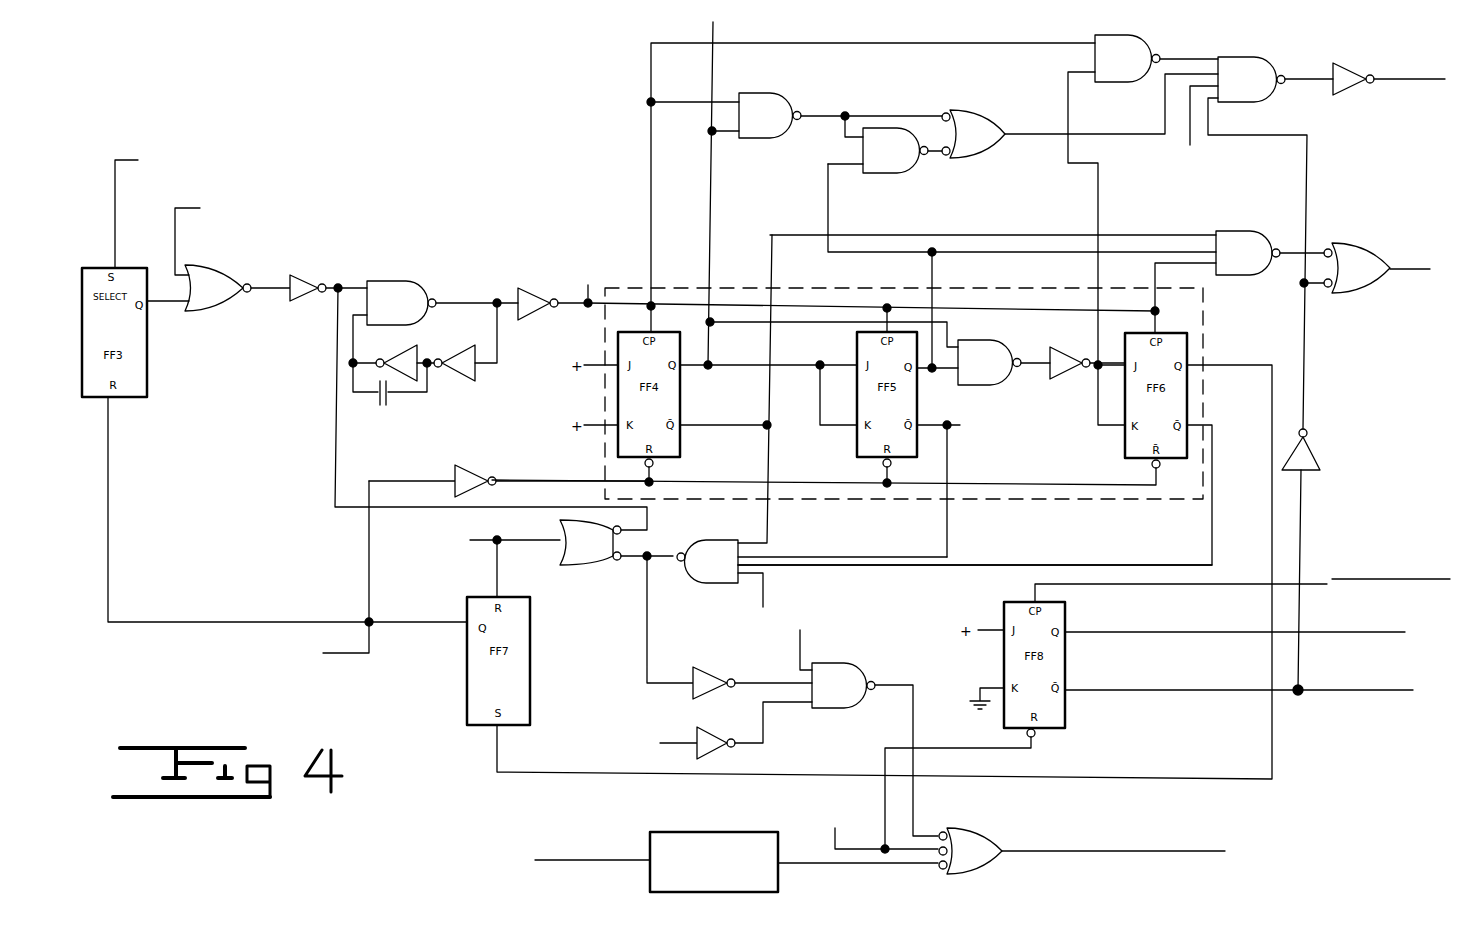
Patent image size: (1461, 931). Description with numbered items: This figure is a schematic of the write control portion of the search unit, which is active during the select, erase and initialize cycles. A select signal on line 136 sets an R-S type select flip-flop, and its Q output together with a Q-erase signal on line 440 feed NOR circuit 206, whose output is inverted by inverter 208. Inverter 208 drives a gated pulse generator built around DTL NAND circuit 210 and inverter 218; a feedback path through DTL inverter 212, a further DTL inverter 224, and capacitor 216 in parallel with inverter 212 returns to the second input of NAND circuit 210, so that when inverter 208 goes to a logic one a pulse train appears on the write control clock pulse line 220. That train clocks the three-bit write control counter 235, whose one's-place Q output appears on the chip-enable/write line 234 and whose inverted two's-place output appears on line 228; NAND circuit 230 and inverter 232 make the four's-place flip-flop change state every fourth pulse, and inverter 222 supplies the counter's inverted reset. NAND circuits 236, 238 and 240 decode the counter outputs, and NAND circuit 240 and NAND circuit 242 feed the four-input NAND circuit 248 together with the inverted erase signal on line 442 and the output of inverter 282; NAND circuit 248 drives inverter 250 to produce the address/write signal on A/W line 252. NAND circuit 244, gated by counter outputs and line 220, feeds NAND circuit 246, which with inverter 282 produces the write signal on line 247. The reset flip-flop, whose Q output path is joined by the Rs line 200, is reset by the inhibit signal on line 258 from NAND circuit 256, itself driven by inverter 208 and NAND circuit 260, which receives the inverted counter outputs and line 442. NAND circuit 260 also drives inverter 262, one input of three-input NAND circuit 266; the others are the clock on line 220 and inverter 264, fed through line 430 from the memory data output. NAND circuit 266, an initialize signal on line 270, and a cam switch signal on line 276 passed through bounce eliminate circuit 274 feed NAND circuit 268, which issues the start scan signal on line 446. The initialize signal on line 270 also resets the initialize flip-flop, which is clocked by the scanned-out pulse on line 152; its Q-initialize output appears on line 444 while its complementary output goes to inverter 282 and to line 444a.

The select signal line 136 is at (117, 201).
The Q-erase signal line 440 is at (175, 238).
The NOR circuit 206 is at (232, 270).
The inverter 208 is at (312, 272).
The DTL logic NAND circuit 210 is at (425, 280).
The DTL inverter 212 is at (412, 345).
The capacitor 216 is at (383, 405).
The inverter 218 is at (545, 290).
The write control clock pulse (WCCP) line 220 is at (590, 320).
The inverter 222 is at (478, 463).
The DTL inverter 224 is at (470, 378).
The WC2Q-bar line 228 is at (948, 472).
The NAND circuit 230 is at (1008, 343).
The inverter 232 is at (1068, 378).
The chip enable/write (CEw) line 234 is at (712, 160).
The write control counter 235 is at (1131, 514).
The NAND circuit 236 is at (780, 90).
The NAND circuit 238 is at (900, 175).
The NAND circuit 240 is at (990, 115).
The NAND circuit 242 is at (1140, 40).
The Q-bar-erase line 442 is at (1185, 148).
The four-input NAND circuit 248 is at (1268, 38).
The inverter 250 is at (1340, 95).
The A/W (address/write) line 252 is at (1428, 86).
The NAND circuit 244 is at (1258, 208).
The NAND circuit 246 is at (1358, 247).
The write signal line 247 is at (1408, 278).
The inverter 282 is at (1318, 455).
The Rs reset line 200 is at (343, 658).
The inhibit signal line 258 is at (480, 543).
The NAND circuit 256 is at (582, 567).
The NAND circuit 260 is at (705, 585).
The inverter 262 is at (713, 680).
The inverter 264 is at (698, 738).
The D-out line 430 is at (668, 750).
The three-input NAND circuit 266 is at (855, 662).
The scanned-out line 152 is at (1310, 590).
The Q-initialize line 444 is at (1372, 640).
The Q-bar-initialize line 444a is at (1328, 696).
The initialize signal line 270 is at (845, 856).
The cam switch line 276 is at (572, 865).
The bounce eliminate circuit 274 is at (722, 832).
The three-input NAND circuit 268 is at (998, 830).
The start scan signal line 446 is at (1178, 850).